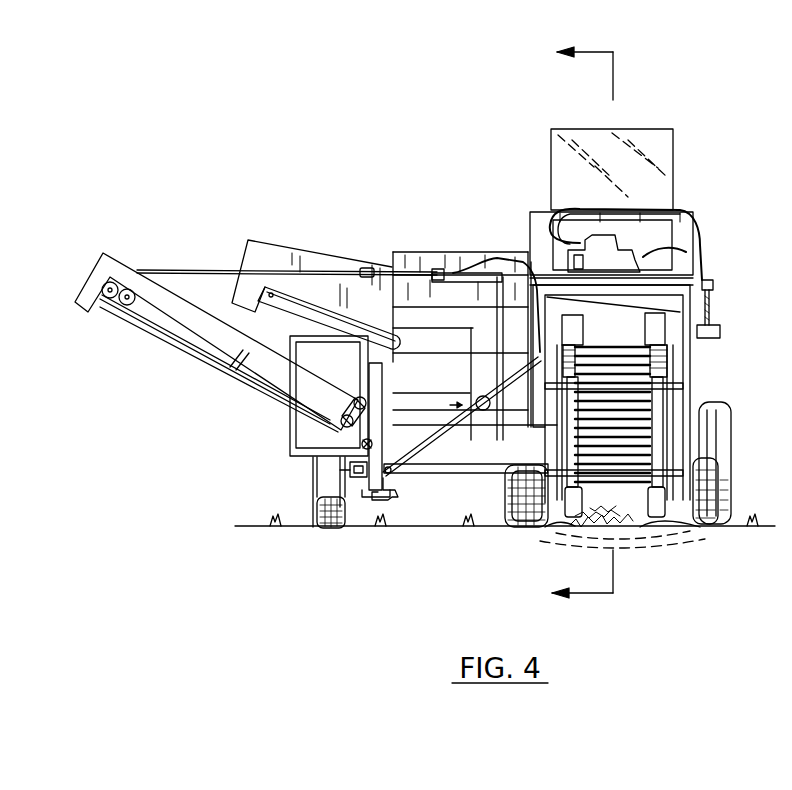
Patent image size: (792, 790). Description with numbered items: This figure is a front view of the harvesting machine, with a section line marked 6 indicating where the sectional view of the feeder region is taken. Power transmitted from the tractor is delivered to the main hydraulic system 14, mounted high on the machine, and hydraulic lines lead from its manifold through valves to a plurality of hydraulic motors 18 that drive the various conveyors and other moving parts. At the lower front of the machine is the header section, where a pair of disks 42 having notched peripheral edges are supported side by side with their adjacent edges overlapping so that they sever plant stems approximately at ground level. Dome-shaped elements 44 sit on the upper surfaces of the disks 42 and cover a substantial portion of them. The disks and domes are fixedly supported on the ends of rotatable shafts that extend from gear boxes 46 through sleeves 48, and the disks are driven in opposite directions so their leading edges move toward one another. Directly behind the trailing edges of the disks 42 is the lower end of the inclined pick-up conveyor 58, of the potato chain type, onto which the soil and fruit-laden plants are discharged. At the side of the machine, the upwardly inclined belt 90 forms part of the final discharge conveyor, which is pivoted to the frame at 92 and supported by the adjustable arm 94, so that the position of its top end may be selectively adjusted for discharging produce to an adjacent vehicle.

The section line 6- 6 is at (574, 324).
The main hydraulic system 14 is at (635, 234).
The hydraulic motors 18 is at (715, 285).
The disks 42 is at (595, 533).
The dome-shaped elements 44 is at (563, 520).
The gear boxes 46 is at (585, 326).
The sleeves 48 is at (575, 445).
The pick-up conveyor 58 is at (605, 505).
The upwardly inclined belt 90 is at (172, 306).
The pivot 92 is at (356, 395).
The adjustable arm 94 is at (218, 269).